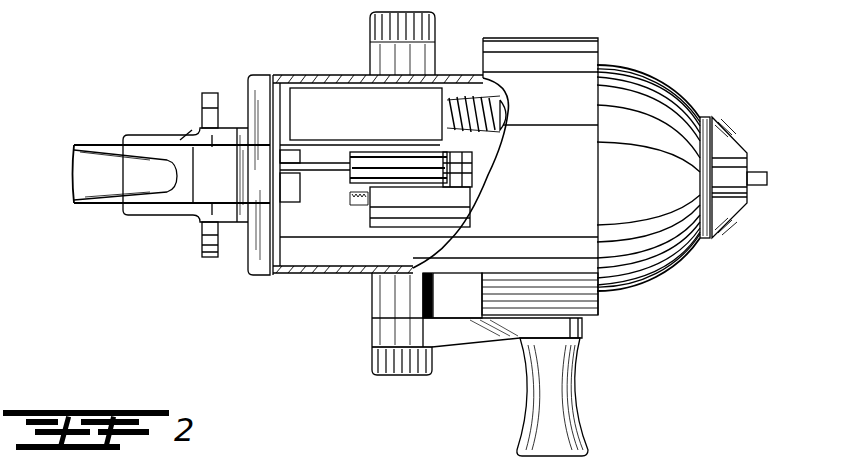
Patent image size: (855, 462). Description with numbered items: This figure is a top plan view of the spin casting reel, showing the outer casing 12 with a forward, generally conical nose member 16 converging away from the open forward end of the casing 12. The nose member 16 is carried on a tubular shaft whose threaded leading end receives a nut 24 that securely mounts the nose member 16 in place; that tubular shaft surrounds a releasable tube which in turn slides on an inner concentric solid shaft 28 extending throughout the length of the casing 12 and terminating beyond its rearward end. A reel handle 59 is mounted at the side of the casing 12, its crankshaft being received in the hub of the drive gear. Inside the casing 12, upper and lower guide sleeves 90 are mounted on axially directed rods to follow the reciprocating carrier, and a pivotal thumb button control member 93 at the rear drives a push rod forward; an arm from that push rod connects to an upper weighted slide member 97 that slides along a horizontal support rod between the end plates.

The outer casing 12 is at (570, 38).
The nose member 16 is at (675, 266).
The nut 24 is at (730, 147).
The inner concentric solid shaft 28 is at (768, 177).
The reel handle 59 is at (583, 327).
The guide sleeve 90 is at (383, 157).
The thumb button control member 93 is at (83, 170).
The weighted slide member 97 is at (315, 98).